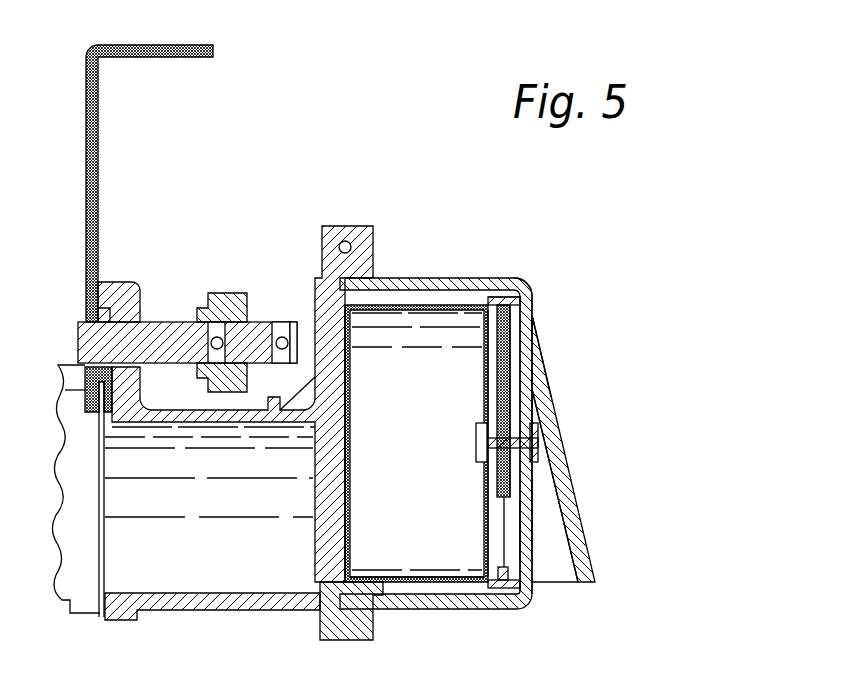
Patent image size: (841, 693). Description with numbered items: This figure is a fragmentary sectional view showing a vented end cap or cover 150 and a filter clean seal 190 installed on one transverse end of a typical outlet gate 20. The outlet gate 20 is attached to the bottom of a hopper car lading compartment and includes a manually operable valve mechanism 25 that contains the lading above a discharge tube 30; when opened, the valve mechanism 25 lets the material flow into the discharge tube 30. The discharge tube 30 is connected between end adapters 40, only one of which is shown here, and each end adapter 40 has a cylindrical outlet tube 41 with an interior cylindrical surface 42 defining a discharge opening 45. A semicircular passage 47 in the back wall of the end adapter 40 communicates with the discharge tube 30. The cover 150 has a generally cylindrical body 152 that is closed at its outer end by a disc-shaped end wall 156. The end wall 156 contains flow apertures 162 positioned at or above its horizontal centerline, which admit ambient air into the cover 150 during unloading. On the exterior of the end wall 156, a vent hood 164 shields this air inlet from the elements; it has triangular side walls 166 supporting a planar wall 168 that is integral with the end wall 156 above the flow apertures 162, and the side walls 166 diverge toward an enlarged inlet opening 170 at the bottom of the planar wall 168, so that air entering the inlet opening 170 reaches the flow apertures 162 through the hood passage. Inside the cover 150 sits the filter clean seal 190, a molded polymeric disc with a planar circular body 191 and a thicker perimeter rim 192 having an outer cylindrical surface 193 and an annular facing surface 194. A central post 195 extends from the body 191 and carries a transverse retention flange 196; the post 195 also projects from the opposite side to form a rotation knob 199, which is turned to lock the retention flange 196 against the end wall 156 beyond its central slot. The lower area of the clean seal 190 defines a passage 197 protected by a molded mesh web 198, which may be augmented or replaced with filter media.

The outlet gate assembly 20 is at (108, 38).
The valve mechanism 25 is at (161, 332).
The discharge tube 30 is at (85, 557).
The end adapter 40 is at (288, 611).
The cylindrical outlet tube 41 is at (398, 290).
The interior cylindrical surface 42 is at (455, 563).
The discharge opening 45 is at (498, 513).
The semicircular passage 47 is at (352, 488).
The vented end cap 150 is at (462, 268).
The cylindrical body 152 is at (470, 300).
The disc-shaped end wall 156 is at (533, 495).
The flow apertures 162 is at (552, 397).
The vent hood 164 is at (548, 364).
The triangular side walls 166 is at (522, 533).
The planar wall 168 is at (531, 497).
The inlet opening 170 is at (553, 600).
The filter clean seal 190 is at (533, 343).
The planar circular body 191 is at (510, 352).
The perimeter rim 192 is at (530, 296).
The outer cylindrical surface 193 is at (497, 298).
The annular facing surface 194 is at (513, 322).
The post 195 is at (537, 438).
The retention flange 196 is at (535, 445).
The passage 197 is at (555, 527).
The mesh web 198 is at (508, 550).
The rotation knob 199 is at (485, 445).